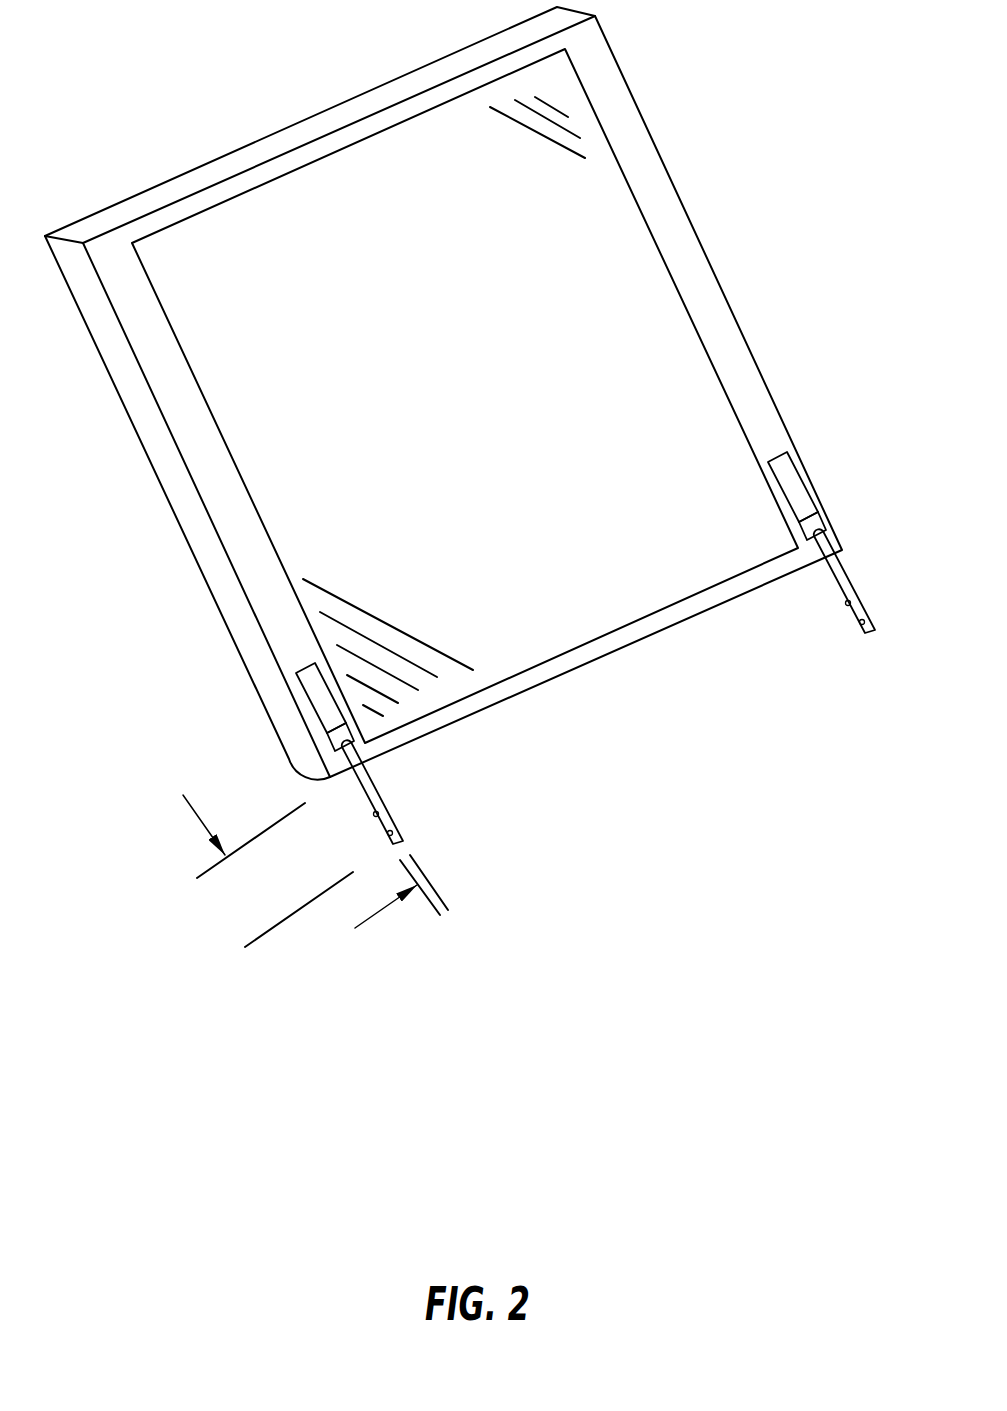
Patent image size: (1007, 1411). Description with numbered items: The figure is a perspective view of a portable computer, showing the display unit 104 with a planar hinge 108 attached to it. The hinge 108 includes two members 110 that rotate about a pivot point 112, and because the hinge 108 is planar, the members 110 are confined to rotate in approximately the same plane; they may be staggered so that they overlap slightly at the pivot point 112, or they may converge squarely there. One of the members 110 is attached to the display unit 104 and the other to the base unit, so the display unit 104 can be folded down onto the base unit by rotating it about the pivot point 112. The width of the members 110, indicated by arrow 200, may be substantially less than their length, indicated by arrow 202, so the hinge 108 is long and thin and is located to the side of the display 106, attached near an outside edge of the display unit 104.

The display unit 104 is at (205, 548).
The display 106 is at (368, 208).
The hinge 108 is at (335, 735).
The members 110 is at (300, 666).
The pivot point 112 is at (348, 762).
The arrow 200 is at (428, 878).
The arrow 202 is at (275, 927).